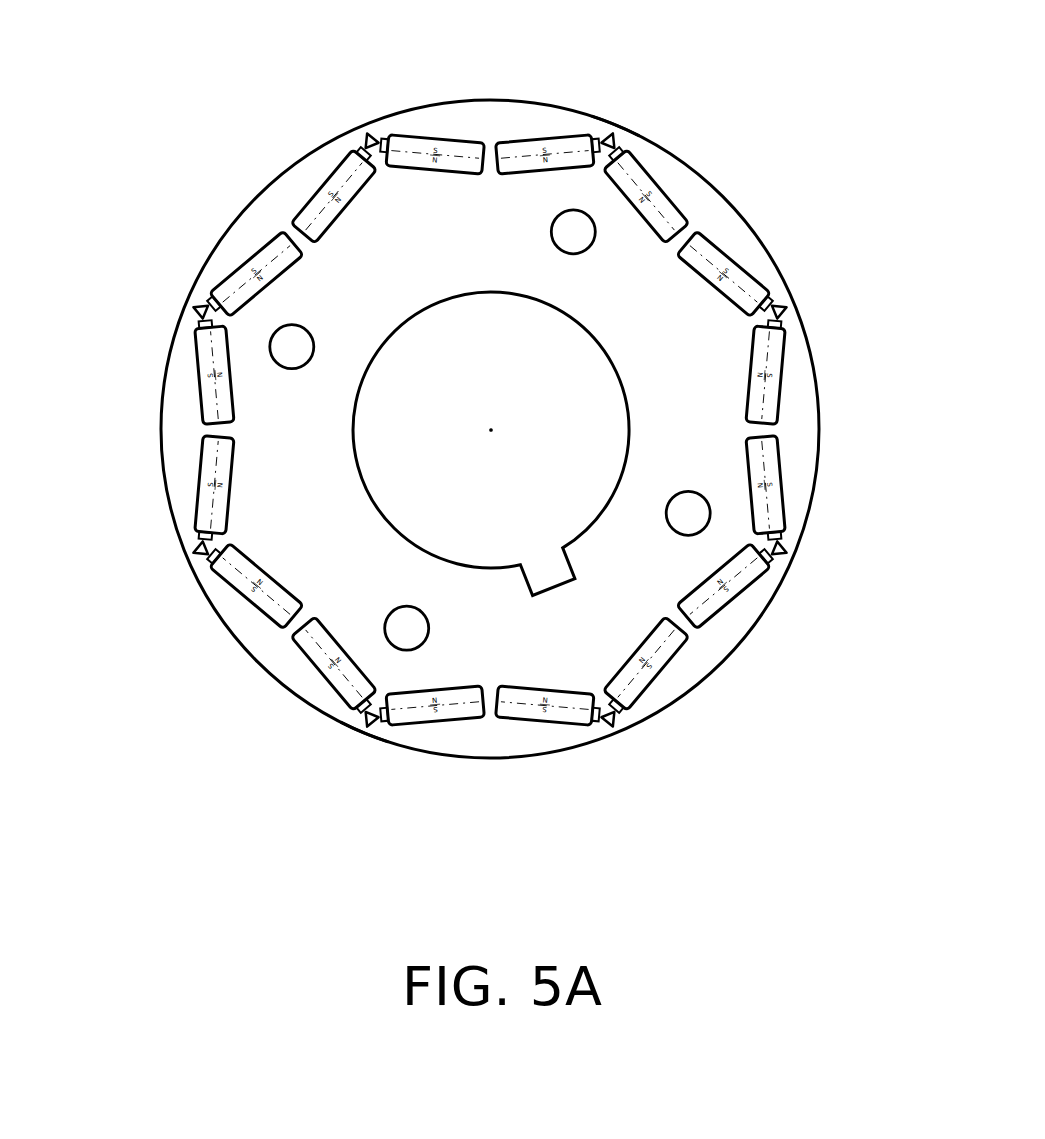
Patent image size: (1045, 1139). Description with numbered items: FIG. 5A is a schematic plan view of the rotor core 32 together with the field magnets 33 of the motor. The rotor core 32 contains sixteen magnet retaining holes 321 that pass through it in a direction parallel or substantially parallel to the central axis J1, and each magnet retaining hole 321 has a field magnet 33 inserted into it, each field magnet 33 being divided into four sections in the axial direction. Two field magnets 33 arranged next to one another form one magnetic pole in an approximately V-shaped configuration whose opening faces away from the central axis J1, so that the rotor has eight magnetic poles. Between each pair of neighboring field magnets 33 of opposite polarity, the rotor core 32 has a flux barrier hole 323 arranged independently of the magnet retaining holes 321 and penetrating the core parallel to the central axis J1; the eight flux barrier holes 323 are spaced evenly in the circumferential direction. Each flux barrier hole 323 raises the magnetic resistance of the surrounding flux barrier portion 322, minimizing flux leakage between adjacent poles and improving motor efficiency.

The rotor core 32 is at (732, 237).
The magnet retaining hole 321 is at (796, 327).
The flux barrier portion 322 is at (643, 136).
The flux barrier hole 323 is at (622, 123).
The field magnet 33 is at (538, 140).
The central axis J1 is at (488, 432).